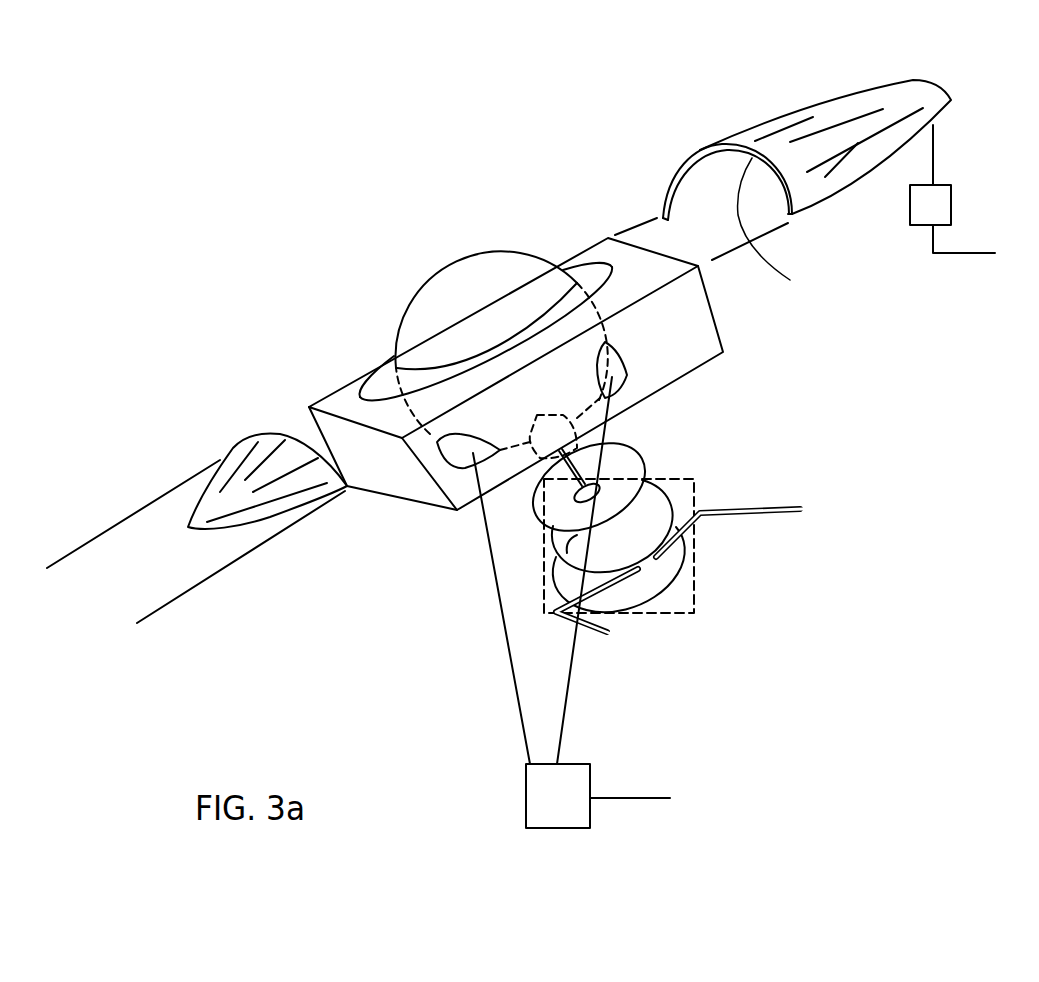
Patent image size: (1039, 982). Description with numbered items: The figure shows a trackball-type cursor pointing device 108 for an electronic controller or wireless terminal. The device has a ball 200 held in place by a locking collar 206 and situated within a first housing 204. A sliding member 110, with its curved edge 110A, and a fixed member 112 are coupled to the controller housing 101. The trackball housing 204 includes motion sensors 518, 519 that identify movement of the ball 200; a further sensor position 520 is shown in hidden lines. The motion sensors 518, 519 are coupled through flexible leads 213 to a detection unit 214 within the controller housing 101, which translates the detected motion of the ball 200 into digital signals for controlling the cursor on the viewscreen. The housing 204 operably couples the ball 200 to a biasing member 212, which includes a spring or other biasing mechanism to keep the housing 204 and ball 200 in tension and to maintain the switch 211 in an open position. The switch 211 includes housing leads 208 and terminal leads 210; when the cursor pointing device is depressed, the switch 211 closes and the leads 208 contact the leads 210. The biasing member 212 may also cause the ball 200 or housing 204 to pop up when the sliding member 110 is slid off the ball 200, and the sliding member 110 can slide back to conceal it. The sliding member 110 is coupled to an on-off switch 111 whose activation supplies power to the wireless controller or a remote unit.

The cursor pointing device 108 is at (258, 114).
The controller housing 101 is at (100, 597).
The fixed member 112 is at (230, 453).
The first housing 204 is at (637, 278).
The locking collar 206 is at (372, 373).
The ball 200 is at (450, 264).
The motion sensor 518 is at (463, 452).
The motion sensor 519 is at (610, 368).
The hidden contact with pin 520 is at (540, 427).
The biasing member 212 is at (623, 448).
The housing leads 208 is at (543, 510).
The switch 211 is at (683, 478).
The terminal leads 210 is at (780, 507).
The flexible leads 213 is at (513, 673).
The detection unit 214 is at (582, 762).
The sliding member 110 is at (815, 108).
The shell opening 110A is at (790, 226).
The switch 111 is at (951, 205).